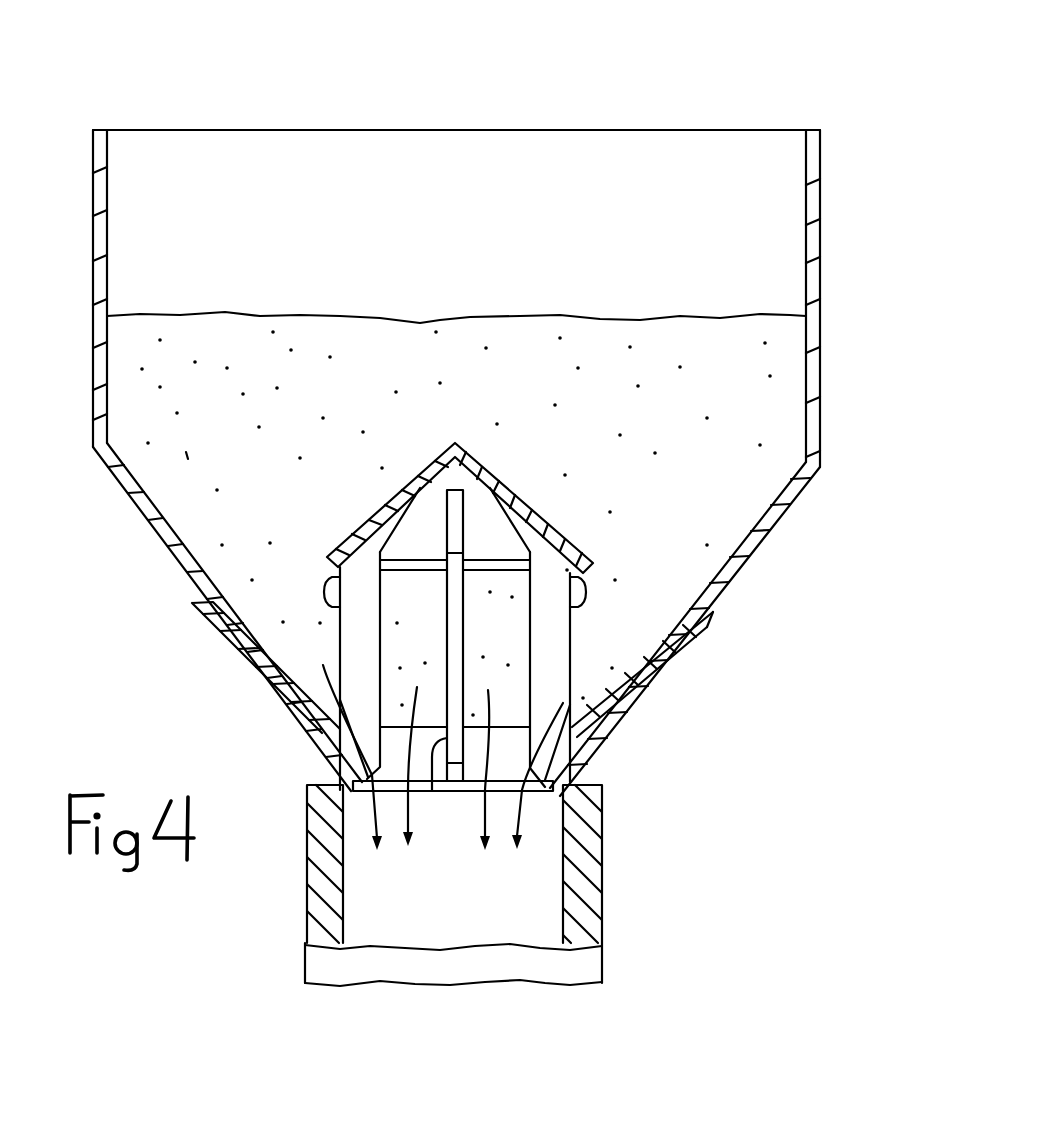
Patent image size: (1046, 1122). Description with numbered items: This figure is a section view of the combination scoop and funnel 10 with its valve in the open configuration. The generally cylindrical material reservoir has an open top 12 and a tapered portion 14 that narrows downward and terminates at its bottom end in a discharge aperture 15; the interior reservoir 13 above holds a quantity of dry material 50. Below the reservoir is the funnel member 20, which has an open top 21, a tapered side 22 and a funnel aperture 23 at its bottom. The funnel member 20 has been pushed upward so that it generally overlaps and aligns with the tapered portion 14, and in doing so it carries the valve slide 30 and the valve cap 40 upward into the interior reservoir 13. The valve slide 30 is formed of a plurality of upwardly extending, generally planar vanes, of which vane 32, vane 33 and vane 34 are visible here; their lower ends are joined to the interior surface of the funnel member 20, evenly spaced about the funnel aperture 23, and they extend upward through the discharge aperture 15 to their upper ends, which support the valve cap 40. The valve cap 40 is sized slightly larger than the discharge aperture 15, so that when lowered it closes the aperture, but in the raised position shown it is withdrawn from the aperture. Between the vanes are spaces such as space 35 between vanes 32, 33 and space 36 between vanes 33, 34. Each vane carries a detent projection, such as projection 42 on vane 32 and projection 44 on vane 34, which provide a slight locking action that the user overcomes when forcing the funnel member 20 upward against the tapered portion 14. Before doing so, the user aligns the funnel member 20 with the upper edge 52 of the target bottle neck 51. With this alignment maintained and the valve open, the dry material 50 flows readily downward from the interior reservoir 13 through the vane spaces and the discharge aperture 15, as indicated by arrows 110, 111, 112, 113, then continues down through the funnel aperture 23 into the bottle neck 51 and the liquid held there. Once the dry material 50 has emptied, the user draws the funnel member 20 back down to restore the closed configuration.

The combination scoop and funnel 10 is at (366, 82).
The open top 12 is at (820, 128).
The interior reservoir 13 is at (680, 227).
The tapered portion 14 is at (755, 543).
The discharge aperture 15 is at (475, 790).
The funnel member 20 is at (666, 698).
The open top 21 is at (713, 612).
The tapered side 22 is at (683, 652).
The funnel aperture 23 is at (540, 788).
The valve slide 30 is at (318, 658).
The vane 32 is at (360, 617).
The vane 33 is at (443, 790).
The vane 34 is at (540, 657).
The space 35 is at (417, 630).
The space 36 is at (505, 630).
The valve cap 40 is at (485, 462).
The detent projection 42 is at (327, 593).
The detent projection 44 is at (587, 590).
The dry material 50 is at (228, 451).
The bottle neck 51 is at (605, 918).
The upper edge 52 is at (318, 780).
The arrow 110 is at (380, 797).
The arrow 111 is at (407, 800).
The arrow 112 is at (480, 818).
The arrow 113 is at (540, 750).